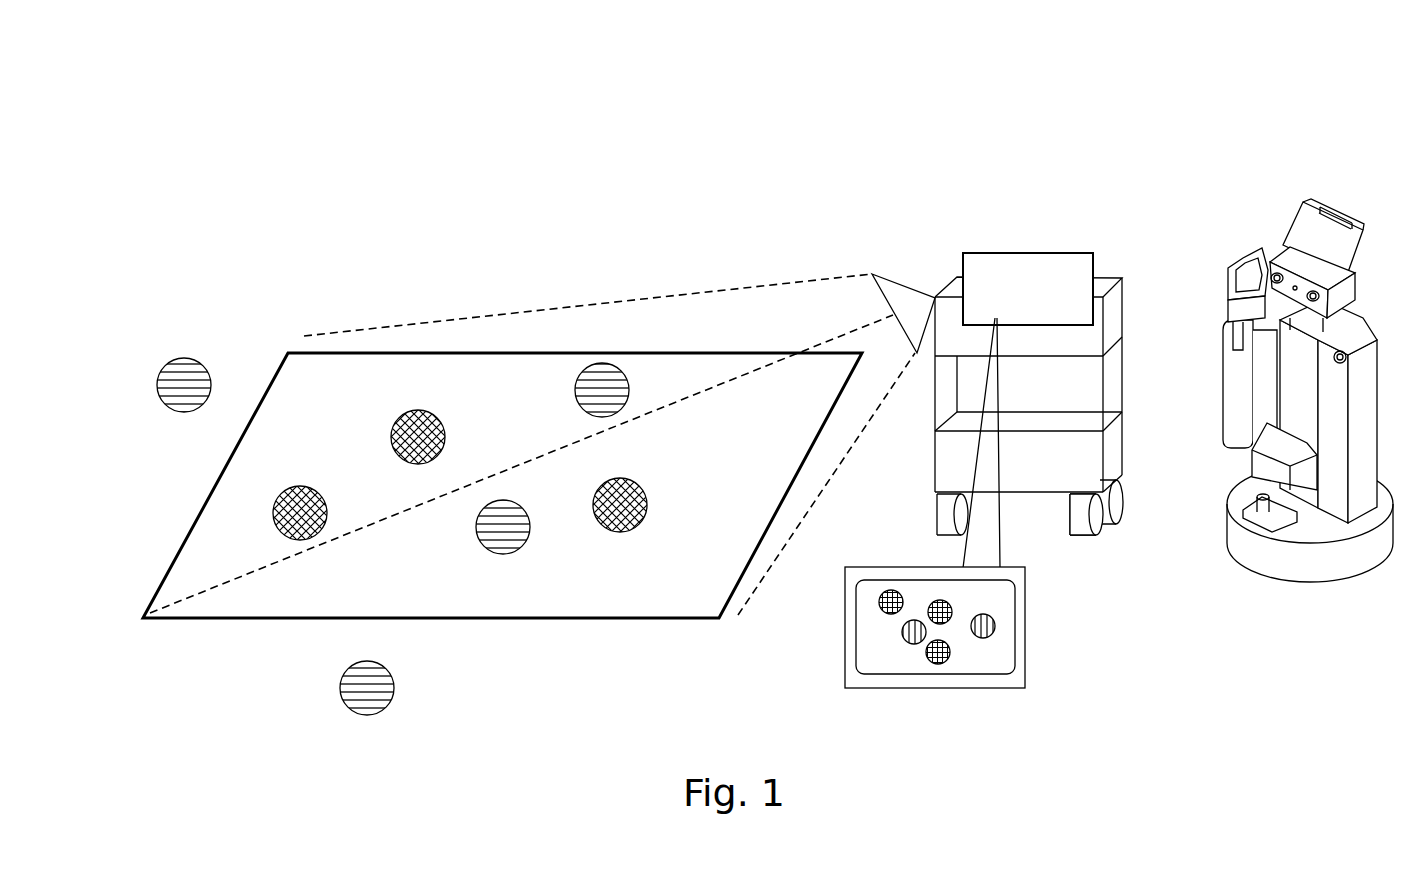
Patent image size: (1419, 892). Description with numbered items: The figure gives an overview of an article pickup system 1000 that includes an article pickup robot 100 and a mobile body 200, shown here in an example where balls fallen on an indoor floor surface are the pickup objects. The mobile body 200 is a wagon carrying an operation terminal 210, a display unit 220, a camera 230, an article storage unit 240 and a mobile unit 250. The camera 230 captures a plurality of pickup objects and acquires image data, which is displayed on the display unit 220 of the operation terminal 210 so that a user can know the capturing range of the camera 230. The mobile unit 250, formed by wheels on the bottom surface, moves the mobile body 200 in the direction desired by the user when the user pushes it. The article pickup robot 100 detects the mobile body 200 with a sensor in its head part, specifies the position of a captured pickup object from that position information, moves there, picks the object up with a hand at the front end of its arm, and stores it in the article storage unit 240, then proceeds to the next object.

The article pickup system 1000 is at (397, 127).
The article pickup robot 100 is at (1346, 169).
The mobile body 200 is at (1039, 160).
The operation terminal 210 is at (1070, 258).
The display unit 220 is at (1025, 688).
The camera 230 is at (902, 297).
The article storage unit 240 is at (1117, 315).
The mobile unit 250 is at (938, 520).